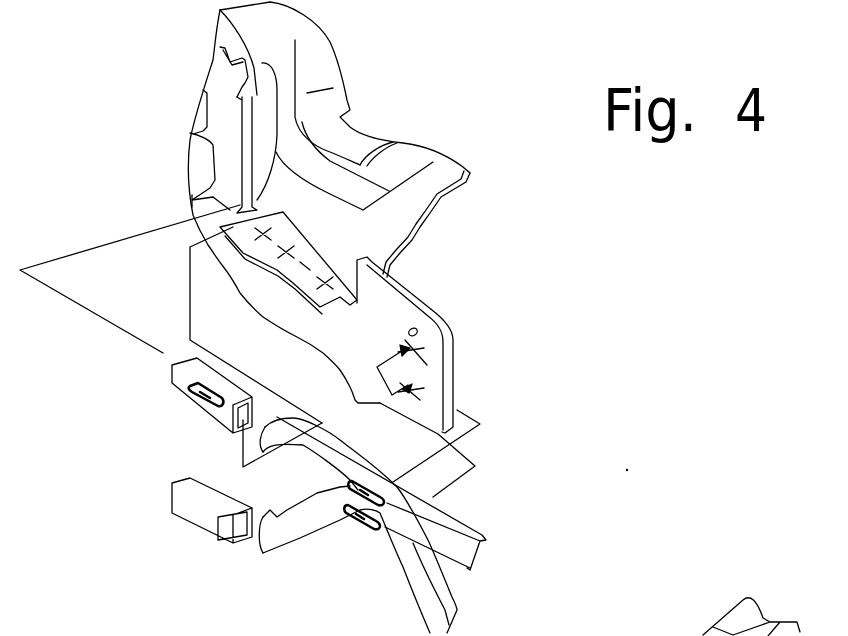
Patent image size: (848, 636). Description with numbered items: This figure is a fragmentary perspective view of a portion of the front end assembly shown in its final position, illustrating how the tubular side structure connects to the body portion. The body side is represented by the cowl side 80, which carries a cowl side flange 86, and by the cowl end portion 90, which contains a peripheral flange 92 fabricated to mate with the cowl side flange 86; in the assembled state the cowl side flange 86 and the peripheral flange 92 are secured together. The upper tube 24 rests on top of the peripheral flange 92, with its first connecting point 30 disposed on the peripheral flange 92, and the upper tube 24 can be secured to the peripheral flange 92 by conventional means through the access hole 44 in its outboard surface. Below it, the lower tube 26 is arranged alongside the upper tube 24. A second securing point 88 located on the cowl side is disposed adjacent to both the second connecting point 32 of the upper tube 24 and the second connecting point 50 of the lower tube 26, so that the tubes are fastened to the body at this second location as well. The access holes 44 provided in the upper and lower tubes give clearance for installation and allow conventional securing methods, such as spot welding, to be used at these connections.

The upper tube 24 is at (183, 388).
The lower tube 26 is at (172, 503).
The first connecting point 30 is at (245, 445).
The second connecting point 32 is at (398, 508).
The access holes 44 is at (357, 510).
The second connecting point 50 is at (388, 547).
The left cowl side 80 is at (197, 181).
The cowl side flange 86 is at (262, 281).
The second securing point 88 is at (416, 328).
The right cowl end portion 90 is at (431, 213).
The peripheral flange 92 is at (277, 218).